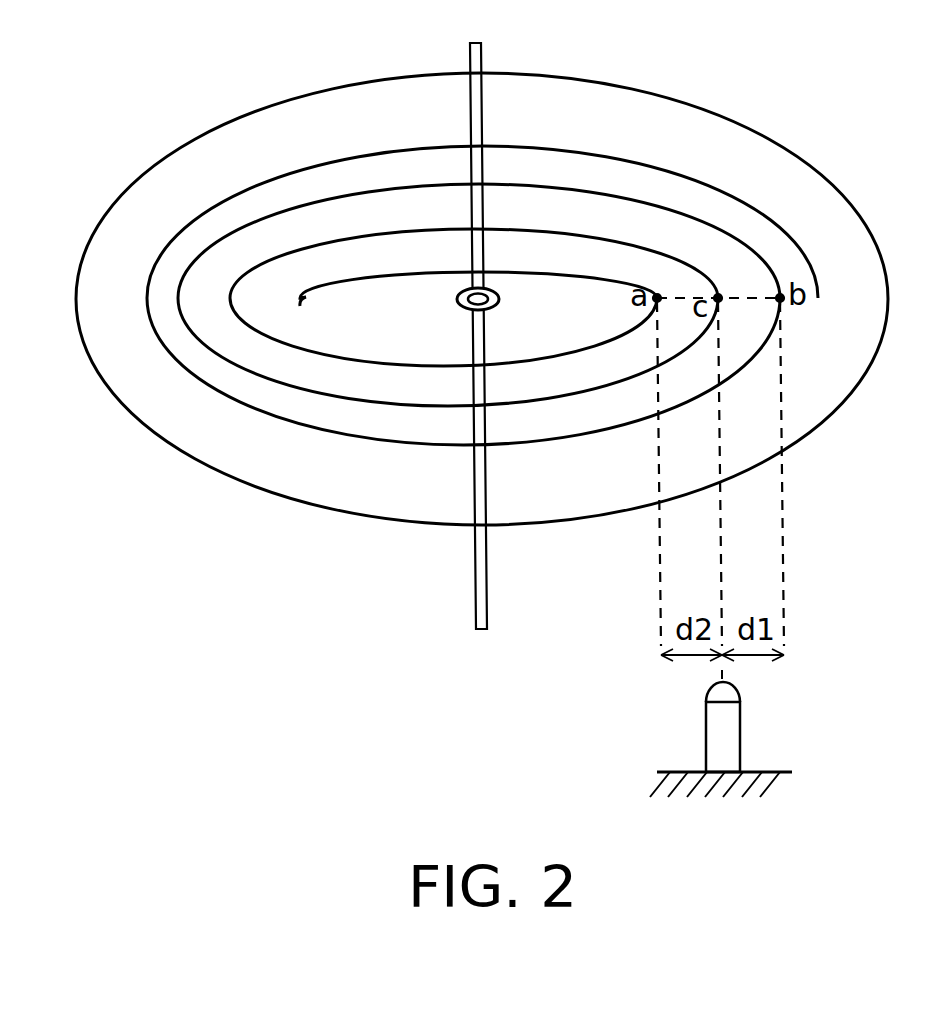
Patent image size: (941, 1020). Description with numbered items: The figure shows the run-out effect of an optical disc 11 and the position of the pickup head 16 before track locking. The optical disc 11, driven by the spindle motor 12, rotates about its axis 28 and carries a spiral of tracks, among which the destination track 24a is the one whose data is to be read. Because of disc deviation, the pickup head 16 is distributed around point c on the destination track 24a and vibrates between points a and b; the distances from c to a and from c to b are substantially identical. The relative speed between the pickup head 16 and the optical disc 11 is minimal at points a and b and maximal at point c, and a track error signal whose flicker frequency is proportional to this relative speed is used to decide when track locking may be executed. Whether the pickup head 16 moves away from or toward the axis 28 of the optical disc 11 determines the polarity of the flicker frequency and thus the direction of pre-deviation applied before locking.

The optical disc 11 is at (731, 117).
The spindle motor 12 is at (476, 588).
The axis 28 is at (495, 290).
The destination track 24a is at (719, 297).
The pickup head 16 is at (733, 738).